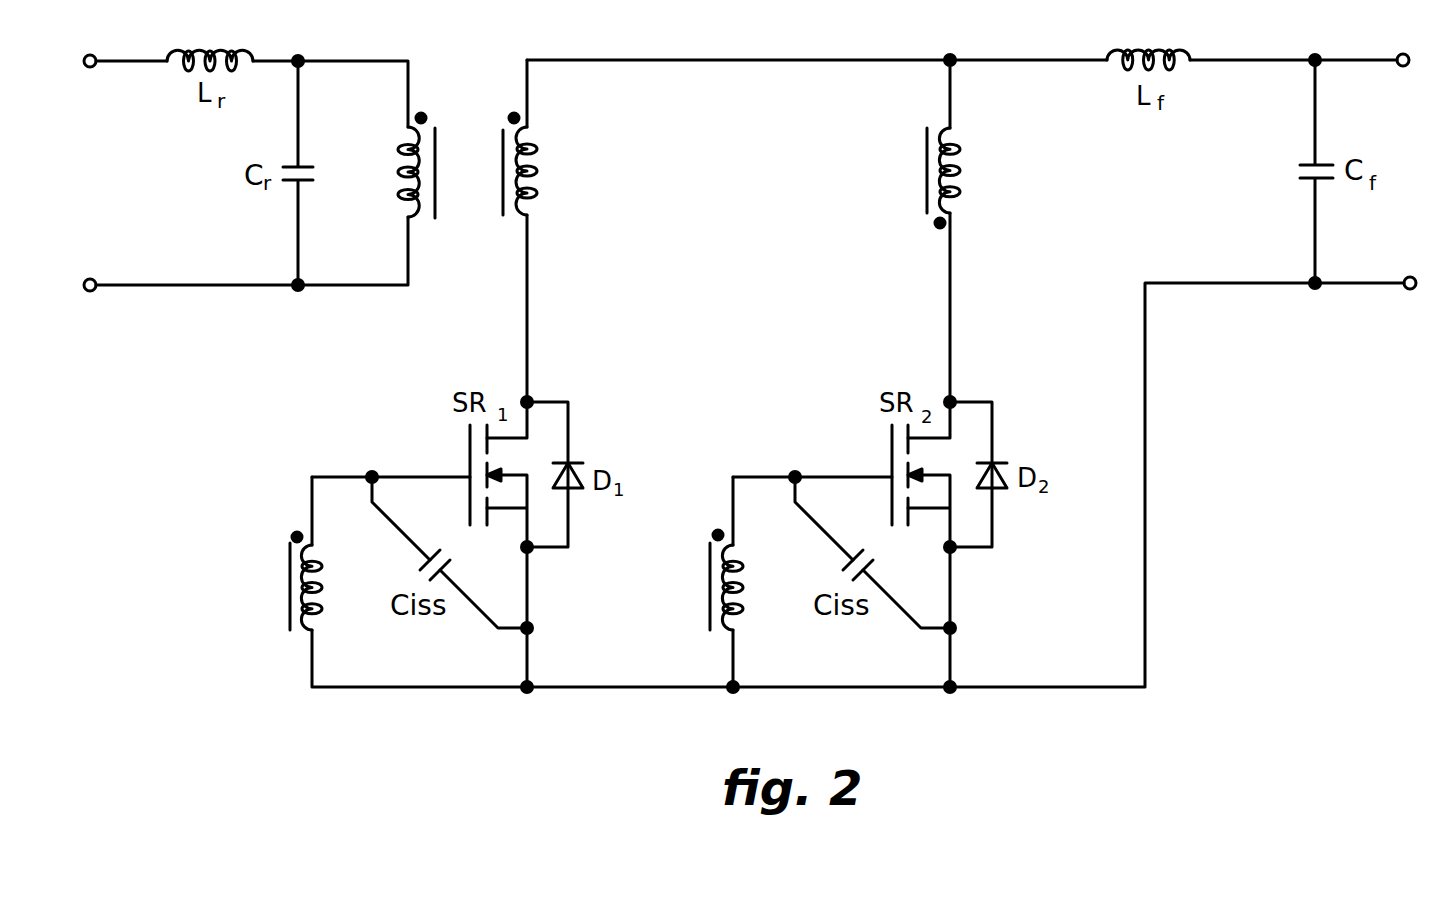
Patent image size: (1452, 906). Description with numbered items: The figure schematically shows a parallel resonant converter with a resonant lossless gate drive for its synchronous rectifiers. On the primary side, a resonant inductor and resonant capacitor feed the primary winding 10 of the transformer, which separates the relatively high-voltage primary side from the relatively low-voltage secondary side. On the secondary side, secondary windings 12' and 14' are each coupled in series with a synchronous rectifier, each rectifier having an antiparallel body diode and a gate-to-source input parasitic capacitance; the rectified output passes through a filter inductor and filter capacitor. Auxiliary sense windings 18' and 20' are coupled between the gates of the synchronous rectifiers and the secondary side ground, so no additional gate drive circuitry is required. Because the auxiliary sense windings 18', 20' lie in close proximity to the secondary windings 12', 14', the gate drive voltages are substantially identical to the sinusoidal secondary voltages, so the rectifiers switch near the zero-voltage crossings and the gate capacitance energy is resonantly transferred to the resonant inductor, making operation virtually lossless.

The primary winding 10 is at (397, 178).
The secondary winding 12' is at (561, 137).
The secondary winding 14' is at (982, 144).
The auxiliary sense winding 18' is at (243, 563).
The auxiliary sense winding 20' is at (671, 585).